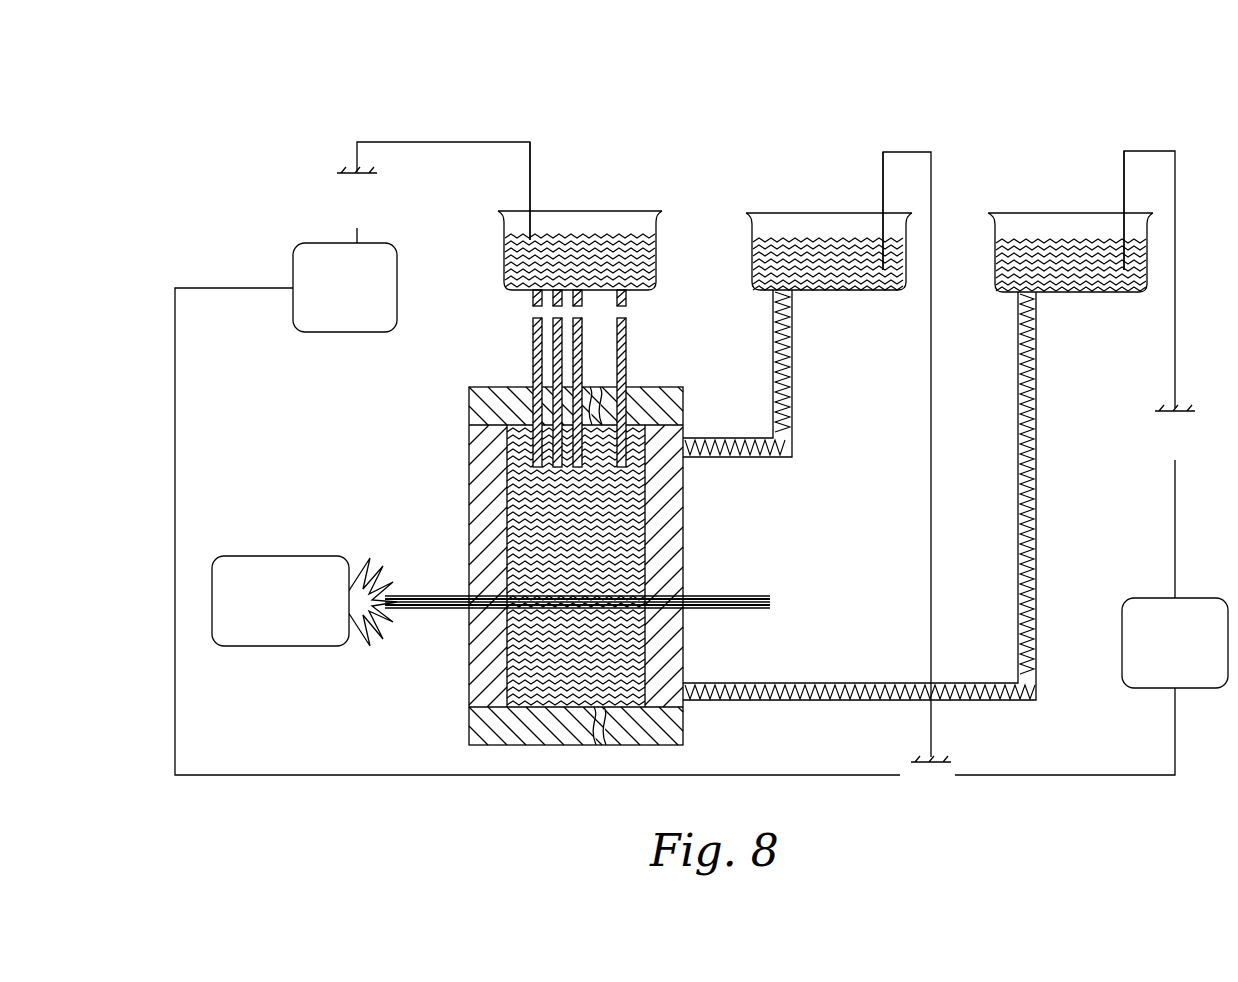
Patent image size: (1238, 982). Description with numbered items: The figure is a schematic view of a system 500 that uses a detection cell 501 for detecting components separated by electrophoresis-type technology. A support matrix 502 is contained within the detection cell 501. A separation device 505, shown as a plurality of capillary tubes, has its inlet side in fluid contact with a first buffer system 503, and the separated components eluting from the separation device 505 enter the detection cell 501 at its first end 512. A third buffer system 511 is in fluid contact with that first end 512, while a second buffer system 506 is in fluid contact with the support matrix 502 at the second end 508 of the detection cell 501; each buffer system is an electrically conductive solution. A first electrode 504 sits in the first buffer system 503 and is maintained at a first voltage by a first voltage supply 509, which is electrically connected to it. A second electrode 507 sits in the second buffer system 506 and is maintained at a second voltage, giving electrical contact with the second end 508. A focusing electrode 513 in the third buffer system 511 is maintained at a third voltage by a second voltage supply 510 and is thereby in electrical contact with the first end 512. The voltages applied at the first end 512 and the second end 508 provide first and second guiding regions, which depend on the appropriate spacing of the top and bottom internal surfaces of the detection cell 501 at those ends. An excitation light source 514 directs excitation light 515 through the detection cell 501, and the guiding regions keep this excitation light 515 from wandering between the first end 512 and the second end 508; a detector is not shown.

The system 500 is at (947, 100).
The detection cell 501 is at (569, 566).
The support matrix 502 is at (640, 520).
The first buffer system 503 is at (660, 228).
The first electrode 504 is at (530, 178).
The separation device 505 is at (533, 348).
The second buffer system 506 is at (1085, 294).
The second electrode 507 is at (1124, 188).
The second end 508 is at (465, 682).
The first voltage supply 509 is at (340, 333).
The second voltage supply 510 is at (1153, 598).
The third buffer system 511 is at (843, 292).
The first end 512 is at (683, 478).
The focusing electrode 513 is at (883, 185).
The excitation light source 514 is at (258, 650).
The excitation light 515 is at (430, 594).